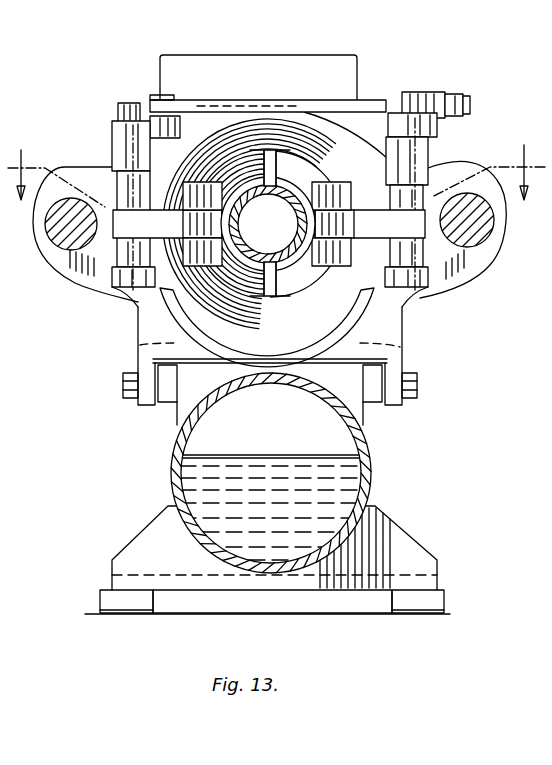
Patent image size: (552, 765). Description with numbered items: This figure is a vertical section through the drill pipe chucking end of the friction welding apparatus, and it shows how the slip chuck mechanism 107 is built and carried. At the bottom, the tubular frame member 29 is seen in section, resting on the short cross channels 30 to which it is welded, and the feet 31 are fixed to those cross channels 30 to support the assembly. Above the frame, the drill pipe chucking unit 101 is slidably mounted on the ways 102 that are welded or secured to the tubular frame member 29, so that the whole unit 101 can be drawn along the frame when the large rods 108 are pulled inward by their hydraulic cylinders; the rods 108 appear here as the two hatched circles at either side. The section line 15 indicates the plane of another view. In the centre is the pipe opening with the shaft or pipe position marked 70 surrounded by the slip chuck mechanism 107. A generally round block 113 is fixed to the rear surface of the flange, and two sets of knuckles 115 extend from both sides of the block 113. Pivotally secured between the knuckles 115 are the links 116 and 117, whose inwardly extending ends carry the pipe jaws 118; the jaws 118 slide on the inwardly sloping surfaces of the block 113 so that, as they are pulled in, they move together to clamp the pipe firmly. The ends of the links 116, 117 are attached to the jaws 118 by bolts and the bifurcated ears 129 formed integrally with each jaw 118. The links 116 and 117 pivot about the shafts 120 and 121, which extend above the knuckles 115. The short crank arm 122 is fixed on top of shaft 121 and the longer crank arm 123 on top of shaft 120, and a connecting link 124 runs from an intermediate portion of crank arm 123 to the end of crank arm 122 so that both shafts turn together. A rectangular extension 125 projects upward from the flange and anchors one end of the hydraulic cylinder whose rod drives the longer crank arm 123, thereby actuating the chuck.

The section line 15- 15 is at (276, 158).
The tubular frame member 29 is at (172, 470).
The cross channels 30 is at (398, 544).
The feet 31 is at (116, 611).
The shaft 70 is at (268, 224).
The drill pipe chucking unit 101 is at (135, 360).
The ways 102 is at (383, 402).
The slip chuck mechanism 107 is at (310, 146).
The large rods 108 is at (46, 234).
The block 113 is at (298, 358).
The knuckles 115 is at (112, 166).
The link 116 is at (405, 223).
The link 117 is at (172, 223).
The pipe jaws 118 is at (288, 302).
The shaft 120 is at (425, 300).
The shaft 121 is at (128, 306).
The short crank arm 122 is at (142, 110).
The longer crank arm 123 is at (430, 118).
The connecting link 124 is at (236, 101).
The rectangular extension 125 is at (291, 56).
The bifurcated ears 129 is at (184, 192).